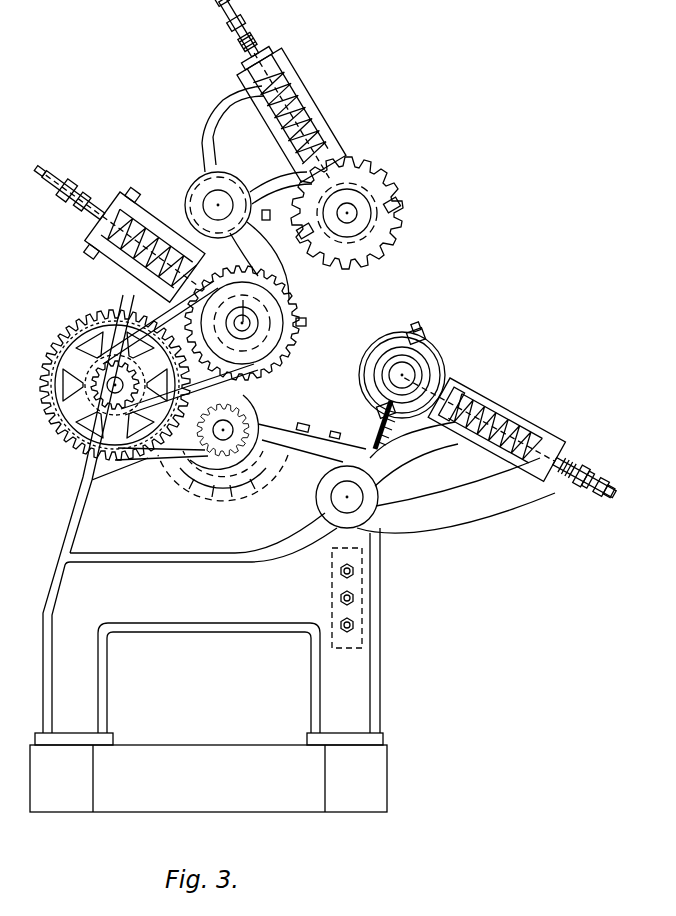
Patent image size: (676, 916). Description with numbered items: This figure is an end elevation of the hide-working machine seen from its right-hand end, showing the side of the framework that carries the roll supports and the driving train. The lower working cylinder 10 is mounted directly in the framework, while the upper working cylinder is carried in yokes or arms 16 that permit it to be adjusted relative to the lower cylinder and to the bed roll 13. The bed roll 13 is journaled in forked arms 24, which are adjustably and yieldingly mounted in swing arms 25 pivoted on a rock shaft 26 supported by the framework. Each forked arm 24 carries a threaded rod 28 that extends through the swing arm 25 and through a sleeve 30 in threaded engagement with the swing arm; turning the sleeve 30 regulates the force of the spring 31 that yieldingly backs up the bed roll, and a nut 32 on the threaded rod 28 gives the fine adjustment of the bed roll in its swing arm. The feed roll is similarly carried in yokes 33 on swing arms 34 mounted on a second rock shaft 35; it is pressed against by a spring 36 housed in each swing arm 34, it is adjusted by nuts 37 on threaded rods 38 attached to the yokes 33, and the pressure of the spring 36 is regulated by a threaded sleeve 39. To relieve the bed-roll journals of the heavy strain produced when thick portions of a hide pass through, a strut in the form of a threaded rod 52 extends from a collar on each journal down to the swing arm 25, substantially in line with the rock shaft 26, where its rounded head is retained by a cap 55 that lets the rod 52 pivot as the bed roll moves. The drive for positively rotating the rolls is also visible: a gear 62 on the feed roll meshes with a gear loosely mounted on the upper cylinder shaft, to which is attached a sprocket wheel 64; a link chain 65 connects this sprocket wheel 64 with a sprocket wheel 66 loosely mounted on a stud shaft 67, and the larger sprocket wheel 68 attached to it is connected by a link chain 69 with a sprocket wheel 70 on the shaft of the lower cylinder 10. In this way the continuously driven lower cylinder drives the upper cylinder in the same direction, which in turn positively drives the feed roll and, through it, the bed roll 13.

The working cylinder 10 is at (214, 486).
The bed roll 13 is at (360, 383).
The yokes or arms 16 is at (243, 300).
The yokes or forked arms 24 is at (437, 392).
The cranks or swing arms 25 is at (448, 534).
The pivot rod or rock shaft 26 is at (340, 497).
The threaded rod 28 is at (606, 490).
The sleeve 30 is at (572, 486).
The spring 31 is at (505, 418).
The nut 32 is at (592, 486).
The yokes 33 is at (358, 176).
The cranks or swing arms 34 is at (216, 122).
The pivot rod or rock shaft 35 is at (212, 200).
The spring 36 is at (266, 97).
The nuts 37 is at (244, 22).
The threaded rods 38 is at (224, 14).
The threaded sleeve 39 is at (256, 48).
The threaded rod 52 is at (374, 438).
The cap 55 is at (352, 453).
The gear 62 is at (352, 276).
The sprocket wheel 64 is at (282, 312).
The link chain 65 is at (195, 290).
The sprocket wheel 66 is at (123, 383).
The stud shaft 67 is at (124, 418).
The larger sprocket wheel 68 is at (50, 418).
The link chain 69 is at (155, 463).
The sprocket wheel 70 is at (235, 482).